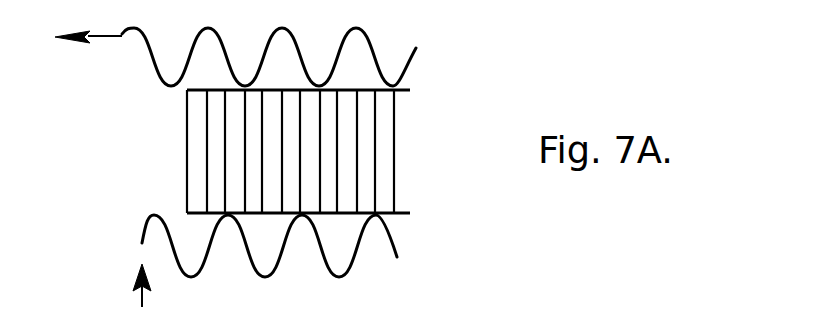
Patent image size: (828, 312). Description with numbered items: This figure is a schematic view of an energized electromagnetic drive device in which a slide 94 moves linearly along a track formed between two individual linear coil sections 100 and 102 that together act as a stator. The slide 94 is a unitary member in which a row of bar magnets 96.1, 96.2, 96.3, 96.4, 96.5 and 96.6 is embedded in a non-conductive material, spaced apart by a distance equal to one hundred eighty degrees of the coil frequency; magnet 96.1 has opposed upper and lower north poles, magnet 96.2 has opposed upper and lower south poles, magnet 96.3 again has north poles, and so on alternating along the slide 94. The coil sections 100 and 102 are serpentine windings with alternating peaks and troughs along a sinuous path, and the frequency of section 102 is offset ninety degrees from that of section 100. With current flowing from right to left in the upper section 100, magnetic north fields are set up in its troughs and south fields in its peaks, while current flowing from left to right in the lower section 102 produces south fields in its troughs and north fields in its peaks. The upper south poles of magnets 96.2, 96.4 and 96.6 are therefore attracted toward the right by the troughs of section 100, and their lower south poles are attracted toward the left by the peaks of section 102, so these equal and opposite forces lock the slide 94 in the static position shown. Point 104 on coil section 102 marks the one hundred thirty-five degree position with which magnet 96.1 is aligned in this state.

The slide 94 is at (298, 154).
The magnet 96.1 is at (187, 146).
The magnet 96.2 is at (225, 117).
The magnet 96.3 is at (262, 167).
The magnet 96.4 is at (322, 170).
The magnet 96.5 is at (394, 146).
The magnet 96.6 is at (362, 182).
The coil section 100 is at (450, 33).
The coil section 102 is at (360, 258).
The point 104 is at (200, 276).